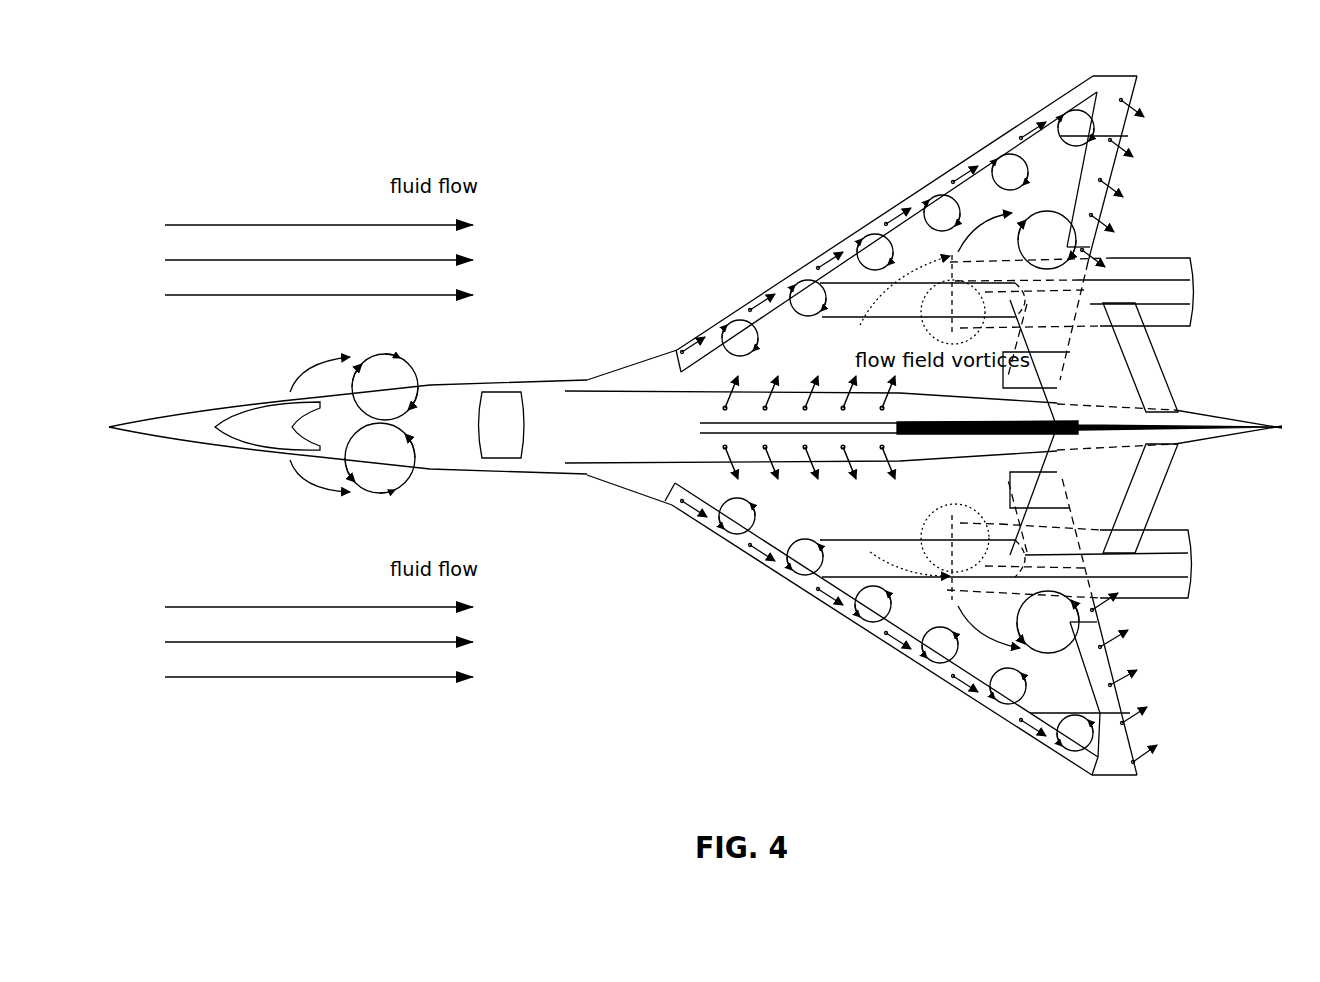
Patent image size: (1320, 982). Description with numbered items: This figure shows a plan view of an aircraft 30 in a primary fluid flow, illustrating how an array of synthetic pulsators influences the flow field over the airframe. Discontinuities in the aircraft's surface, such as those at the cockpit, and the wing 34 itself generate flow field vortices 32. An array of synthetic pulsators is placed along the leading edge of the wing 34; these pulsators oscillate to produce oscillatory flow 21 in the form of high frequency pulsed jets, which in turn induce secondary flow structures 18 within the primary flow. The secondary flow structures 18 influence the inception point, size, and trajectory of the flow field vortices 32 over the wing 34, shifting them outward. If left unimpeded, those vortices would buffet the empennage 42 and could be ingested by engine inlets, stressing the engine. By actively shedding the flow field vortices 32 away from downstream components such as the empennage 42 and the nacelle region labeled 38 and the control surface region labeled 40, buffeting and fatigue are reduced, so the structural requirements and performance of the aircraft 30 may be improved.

The aircraft 30 is at (521, 146).
The secondary flow structures 18 is at (896, 427).
The oscillatory flow 21 is at (823, 252).
The flow field vortices 32 is at (991, 405).
The wing 34 is at (1110, 72).
The engine nacelle 38 is at (1192, 267).
The trailing edge control surface 40 is at (1103, 183).
The empennage 42 is at (1170, 390).